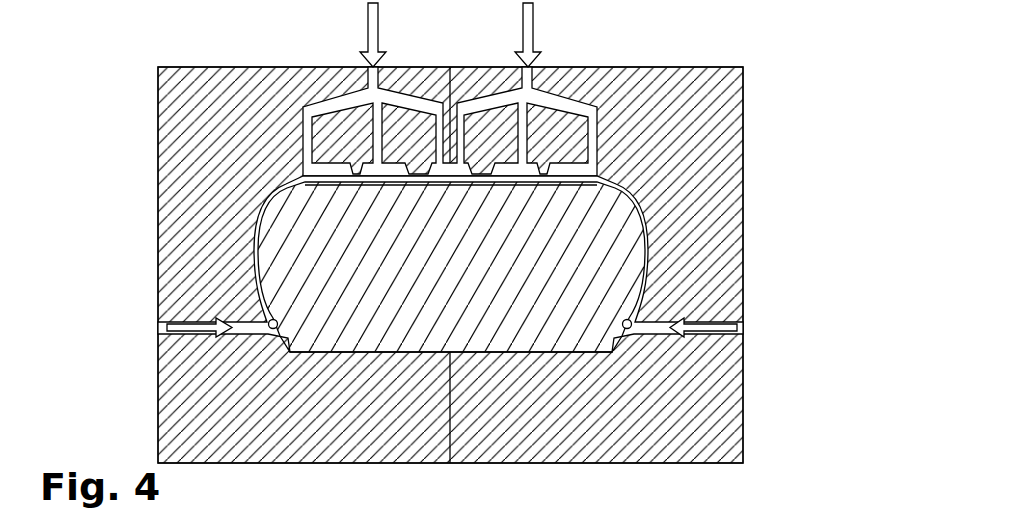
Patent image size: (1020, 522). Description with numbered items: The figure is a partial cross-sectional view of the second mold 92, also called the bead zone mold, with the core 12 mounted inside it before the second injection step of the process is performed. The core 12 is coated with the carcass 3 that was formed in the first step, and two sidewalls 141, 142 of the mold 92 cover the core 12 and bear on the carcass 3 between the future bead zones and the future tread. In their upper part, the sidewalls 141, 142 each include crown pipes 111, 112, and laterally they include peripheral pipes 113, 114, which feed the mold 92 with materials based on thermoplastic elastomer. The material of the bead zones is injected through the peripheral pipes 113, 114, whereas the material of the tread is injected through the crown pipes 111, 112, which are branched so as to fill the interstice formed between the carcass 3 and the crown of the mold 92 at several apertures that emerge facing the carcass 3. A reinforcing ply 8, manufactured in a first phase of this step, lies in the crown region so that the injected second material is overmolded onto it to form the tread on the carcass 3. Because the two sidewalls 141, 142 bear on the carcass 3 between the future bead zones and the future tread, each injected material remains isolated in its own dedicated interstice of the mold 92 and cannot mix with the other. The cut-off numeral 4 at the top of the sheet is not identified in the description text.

The carcass 3 is at (632, 305).
The mold segment 4 is at (468, 88).
The reinforcing ply 8 is at (598, 180).
The second mold 92 is at (790, 96).
The crown pipe 111 is at (528, 79).
The crown pipe 112 is at (374, 81).
The peripheral pipe 113 is at (743, 327).
The peripheral pipe 114 is at (158, 326).
The core 12 is at (623, 248).
The sidewall 141 is at (708, 142).
The sidewall 142 is at (192, 135).